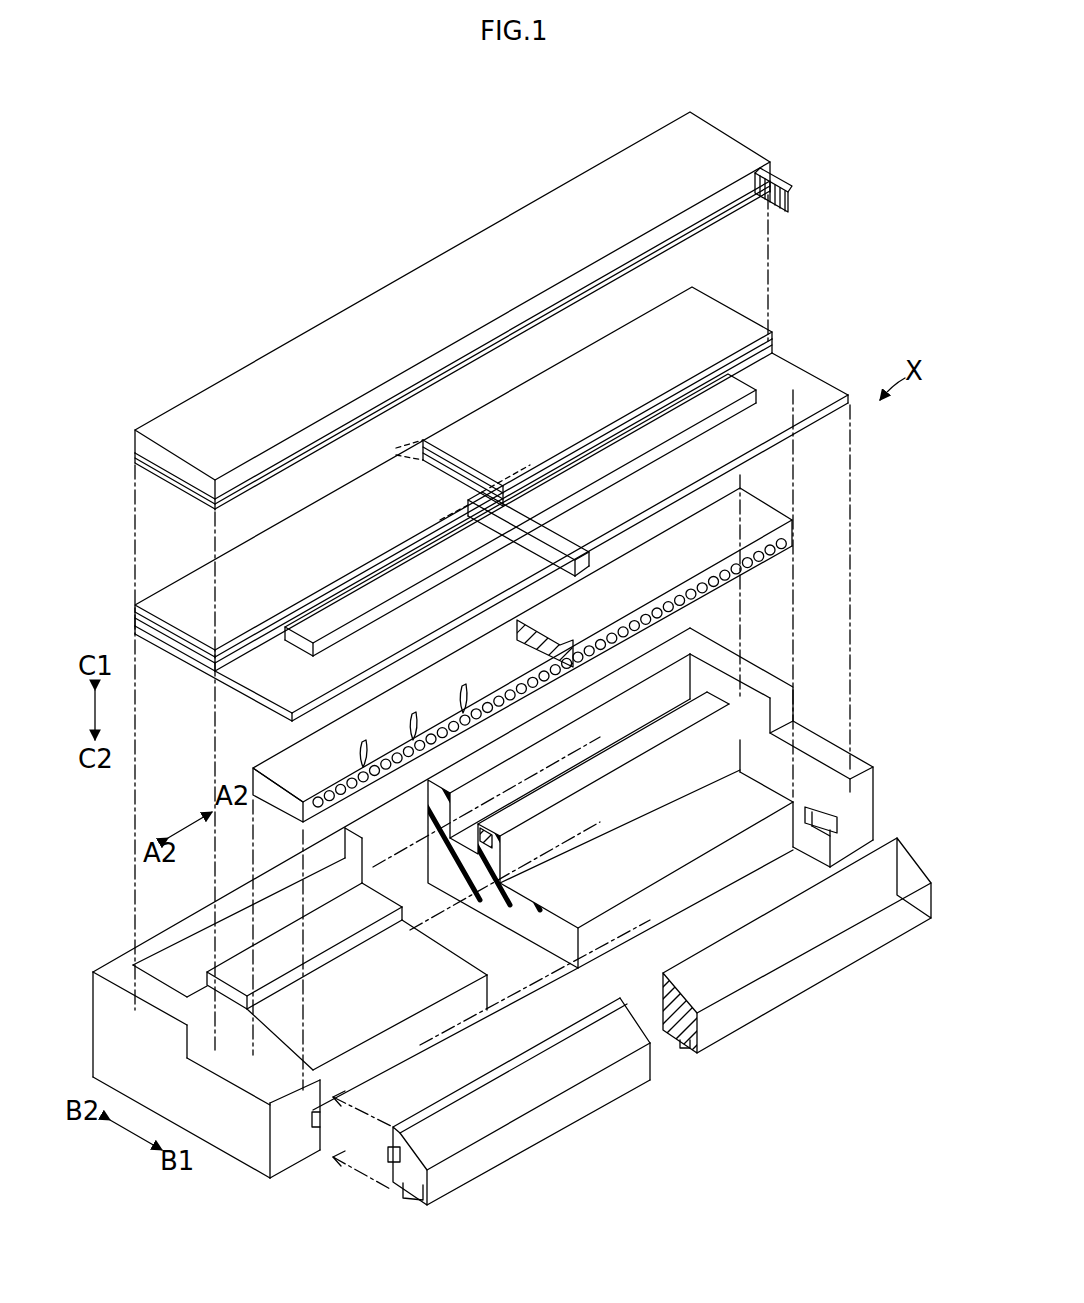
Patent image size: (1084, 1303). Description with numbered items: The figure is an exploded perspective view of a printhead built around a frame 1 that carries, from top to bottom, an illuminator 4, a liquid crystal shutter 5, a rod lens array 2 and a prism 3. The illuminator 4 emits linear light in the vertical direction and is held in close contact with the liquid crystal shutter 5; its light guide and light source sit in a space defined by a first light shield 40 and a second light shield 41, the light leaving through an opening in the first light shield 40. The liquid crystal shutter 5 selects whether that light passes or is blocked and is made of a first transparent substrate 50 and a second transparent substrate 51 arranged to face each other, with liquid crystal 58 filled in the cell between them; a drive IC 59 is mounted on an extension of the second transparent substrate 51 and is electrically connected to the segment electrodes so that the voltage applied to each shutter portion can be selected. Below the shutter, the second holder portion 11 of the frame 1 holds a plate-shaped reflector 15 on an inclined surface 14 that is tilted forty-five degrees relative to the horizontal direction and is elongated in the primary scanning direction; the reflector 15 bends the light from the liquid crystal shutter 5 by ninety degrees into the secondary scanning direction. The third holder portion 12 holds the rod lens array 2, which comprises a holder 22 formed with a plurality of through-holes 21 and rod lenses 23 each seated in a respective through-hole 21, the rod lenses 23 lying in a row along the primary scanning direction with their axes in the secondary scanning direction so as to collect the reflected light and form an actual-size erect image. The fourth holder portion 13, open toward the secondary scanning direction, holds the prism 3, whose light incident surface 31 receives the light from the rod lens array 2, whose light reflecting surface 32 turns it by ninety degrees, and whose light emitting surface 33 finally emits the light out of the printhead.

The frame 1 is at (483, 893).
The rod lens array 2 is at (550, 635).
The prism 3 is at (667, 996).
The illuminator 4 is at (463, 319).
The liquid crystal shutter 5 is at (186, 668).
The second holder portion 11 is at (188, 985).
The third holder portion 12 is at (382, 972).
The fourth holder portion 13 is at (668, 863).
The inclined surface 14 is at (655, 782).
The reflector 15 is at (228, 968).
The through-holes 21 is at (782, 555).
The holder 22 is at (752, 508).
The rod lenses 23 is at (645, 630).
The light incident surface 31 is at (668, 972).
The light reflecting surface 32 is at (917, 895).
The light emitting surface 33 is at (680, 1050).
The first light shield 40 is at (182, 482).
The second light shield 41 is at (178, 413).
The first transparent substrate 50 is at (458, 515).
The second transparent substrate 51 is at (268, 703).
The liquid crystal 58 is at (140, 622).
The drive IC 59 is at (732, 383).